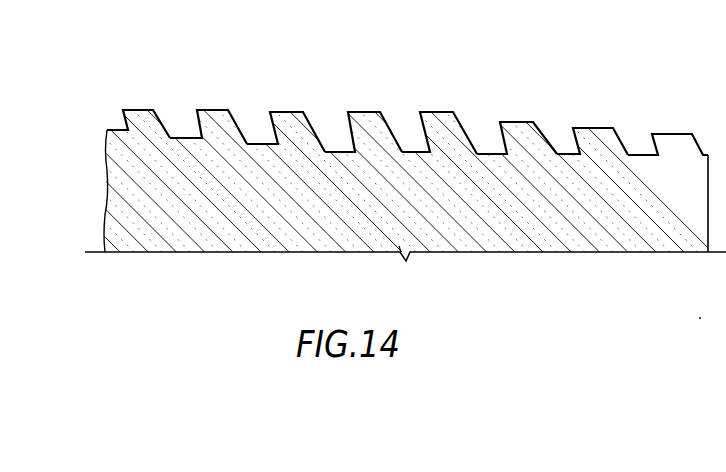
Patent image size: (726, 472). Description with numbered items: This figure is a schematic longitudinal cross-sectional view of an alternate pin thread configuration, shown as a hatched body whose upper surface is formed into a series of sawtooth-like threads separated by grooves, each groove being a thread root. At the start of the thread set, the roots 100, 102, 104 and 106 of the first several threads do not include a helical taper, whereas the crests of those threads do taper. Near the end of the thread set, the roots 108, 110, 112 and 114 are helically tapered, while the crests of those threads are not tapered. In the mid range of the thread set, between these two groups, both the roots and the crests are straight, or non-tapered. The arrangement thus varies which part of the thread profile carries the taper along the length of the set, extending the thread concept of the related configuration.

The root 100 is at (640, 154).
The root 102 is at (562, 153).
The root 104 is at (487, 153).
The root 106 is at (410, 151).
The root 108 is at (333, 151).
The root 110 is at (255, 143).
The root 112 is at (182, 137).
The root 114 is at (118, 128).